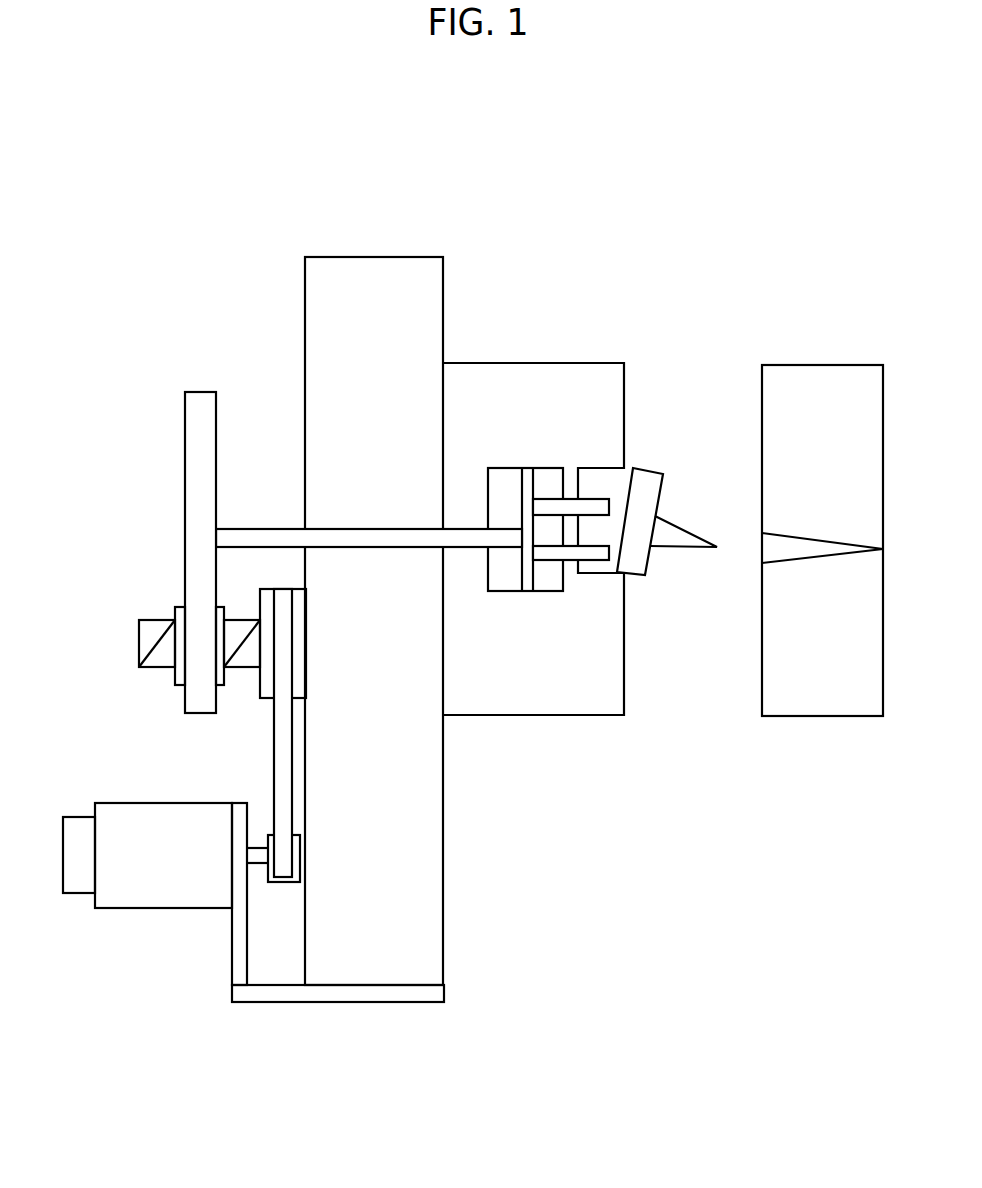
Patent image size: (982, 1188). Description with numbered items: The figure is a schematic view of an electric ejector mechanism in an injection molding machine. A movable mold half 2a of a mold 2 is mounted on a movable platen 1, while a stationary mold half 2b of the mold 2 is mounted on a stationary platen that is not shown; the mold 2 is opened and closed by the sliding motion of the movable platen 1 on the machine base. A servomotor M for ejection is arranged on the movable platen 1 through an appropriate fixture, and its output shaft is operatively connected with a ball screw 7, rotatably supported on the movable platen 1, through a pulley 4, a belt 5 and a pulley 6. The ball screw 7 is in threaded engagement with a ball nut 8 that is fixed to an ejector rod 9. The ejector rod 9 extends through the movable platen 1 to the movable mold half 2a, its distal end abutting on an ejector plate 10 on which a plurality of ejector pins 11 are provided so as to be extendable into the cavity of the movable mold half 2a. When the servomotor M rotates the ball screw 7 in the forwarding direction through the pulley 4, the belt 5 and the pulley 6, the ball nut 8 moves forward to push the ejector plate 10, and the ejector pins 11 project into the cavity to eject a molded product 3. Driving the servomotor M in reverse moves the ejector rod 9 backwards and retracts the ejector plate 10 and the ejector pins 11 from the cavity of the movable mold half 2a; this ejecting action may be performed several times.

The movable platen 1 is at (373, 262).
The mold 2 is at (647, 352).
The movable mold half 2a is at (527, 365).
The stationary mold half 2b is at (848, 366).
The molded product 3 is at (637, 578).
The pulley 4 is at (268, 833).
The belt 5 is at (275, 730).
The pulley 6 is at (260, 603).
The ball screw 7 is at (144, 618).
The ball nut 8 is at (178, 607).
The ejector rod 9 is at (272, 532).
The ejector plate 10 is at (525, 583).
The ejector pins 11 is at (573, 562).
The servomotor M is at (156, 900).